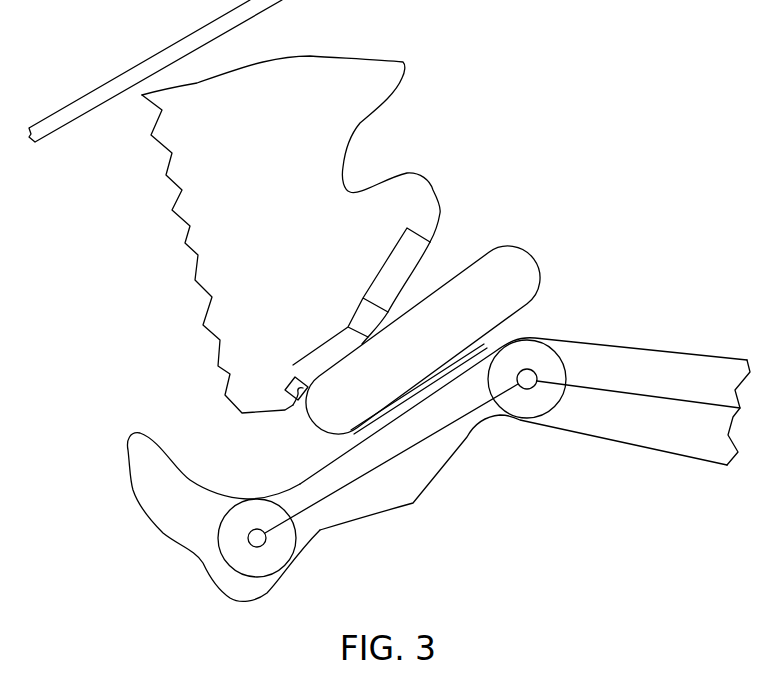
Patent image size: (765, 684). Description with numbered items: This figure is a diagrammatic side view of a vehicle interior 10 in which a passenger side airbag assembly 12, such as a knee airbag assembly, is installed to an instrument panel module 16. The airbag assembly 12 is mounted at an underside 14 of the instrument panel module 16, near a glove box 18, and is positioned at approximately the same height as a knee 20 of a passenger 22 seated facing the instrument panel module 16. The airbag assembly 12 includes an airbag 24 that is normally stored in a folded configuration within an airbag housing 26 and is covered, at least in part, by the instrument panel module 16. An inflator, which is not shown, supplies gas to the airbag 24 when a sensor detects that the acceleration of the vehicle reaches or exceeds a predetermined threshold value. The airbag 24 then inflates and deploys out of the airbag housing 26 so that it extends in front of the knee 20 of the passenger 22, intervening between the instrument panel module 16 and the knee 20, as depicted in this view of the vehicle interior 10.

The vehicle interior 10 is at (585, 152).
The airbag assembly 12 is at (305, 375).
The underside 14 is at (430, 258).
The instrument panel module 16 is at (337, 74).
The glove box 18 is at (386, 265).
The knee 20 is at (486, 349).
The passenger 22 is at (648, 452).
The airbag 24 is at (540, 277).
The airbag housing 26 is at (300, 397).